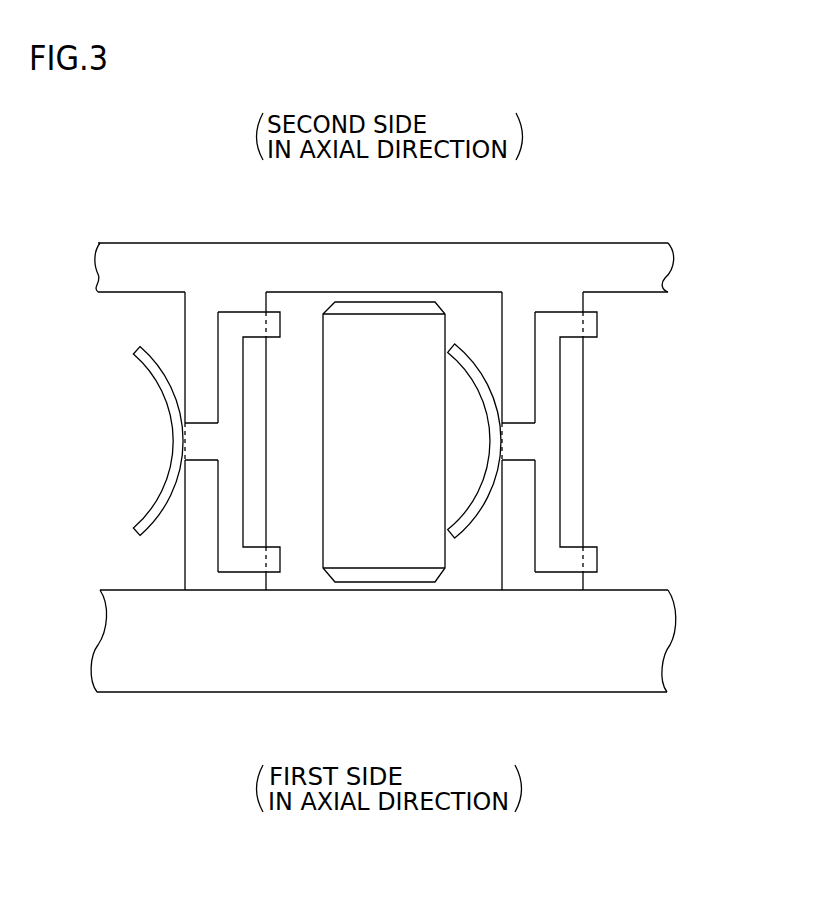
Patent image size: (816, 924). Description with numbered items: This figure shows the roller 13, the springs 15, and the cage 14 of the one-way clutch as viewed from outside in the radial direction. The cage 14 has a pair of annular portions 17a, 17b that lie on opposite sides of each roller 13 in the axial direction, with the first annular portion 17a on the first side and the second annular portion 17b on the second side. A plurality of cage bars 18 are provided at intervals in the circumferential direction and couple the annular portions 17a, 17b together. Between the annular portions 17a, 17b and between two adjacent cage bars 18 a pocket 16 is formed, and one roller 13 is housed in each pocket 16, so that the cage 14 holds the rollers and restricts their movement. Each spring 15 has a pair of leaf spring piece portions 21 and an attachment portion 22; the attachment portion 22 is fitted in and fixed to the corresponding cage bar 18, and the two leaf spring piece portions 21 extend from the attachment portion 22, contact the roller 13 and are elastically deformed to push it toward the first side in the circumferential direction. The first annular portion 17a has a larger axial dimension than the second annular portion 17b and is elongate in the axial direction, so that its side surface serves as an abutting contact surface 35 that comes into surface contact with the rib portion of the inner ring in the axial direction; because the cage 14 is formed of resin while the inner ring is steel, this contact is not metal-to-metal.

The roller 13 is at (385, 328).
The cage 14 is at (383, 479).
The spring 15 is at (240, 312).
The pocket 16 is at (300, 312).
The first annular portion 17a is at (383, 704).
The second annular portion 17b is at (543, 263).
The cage bar 18 is at (362, 398).
The leaf spring piece portion 21 is at (481, 386).
The attachment portion 22 is at (535, 442).
The abutting contact surface 35 is at (190, 692).